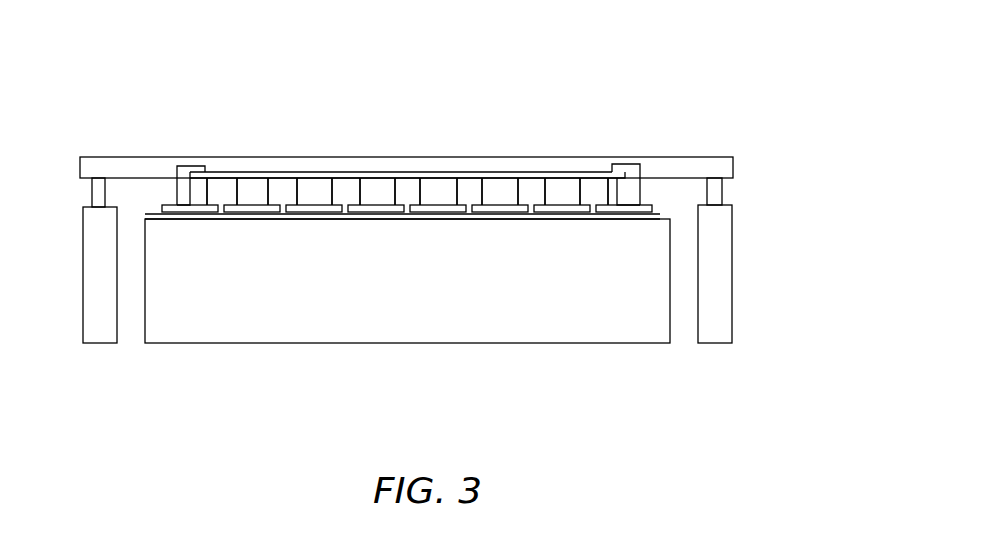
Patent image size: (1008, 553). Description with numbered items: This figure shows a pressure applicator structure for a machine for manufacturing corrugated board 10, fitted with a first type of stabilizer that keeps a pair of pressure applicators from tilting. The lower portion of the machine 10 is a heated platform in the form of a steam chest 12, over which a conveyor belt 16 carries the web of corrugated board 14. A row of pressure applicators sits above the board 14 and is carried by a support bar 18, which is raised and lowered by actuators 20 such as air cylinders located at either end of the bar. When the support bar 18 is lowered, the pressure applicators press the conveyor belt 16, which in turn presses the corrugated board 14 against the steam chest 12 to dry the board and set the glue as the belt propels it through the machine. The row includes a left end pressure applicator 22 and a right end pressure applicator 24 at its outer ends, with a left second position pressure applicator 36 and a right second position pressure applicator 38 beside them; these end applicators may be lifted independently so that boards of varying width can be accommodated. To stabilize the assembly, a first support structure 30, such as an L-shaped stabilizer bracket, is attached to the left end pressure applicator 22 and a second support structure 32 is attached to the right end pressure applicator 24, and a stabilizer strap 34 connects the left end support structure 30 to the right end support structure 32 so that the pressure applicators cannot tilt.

The machine for manufacturing corrugated board 10 is at (85, 92).
The steam chest 12 is at (178, 343).
The corrugated board 14 is at (407, 262).
The conveyor belt 16 is at (152, 212).
The support bar 18 is at (685, 157).
The actuator 20 is at (83, 293).
The left end pressure applicator 22 is at (185, 212).
The right end pressure applicator 24 is at (633, 210).
The first support structure 30 is at (187, 157).
The second support structure 32 is at (625, 157).
The stabilizer strap 34 is at (323, 157).
The left second position pressure applicator 36 is at (252, 212).
The right second position pressure applicator 38 is at (562, 208).